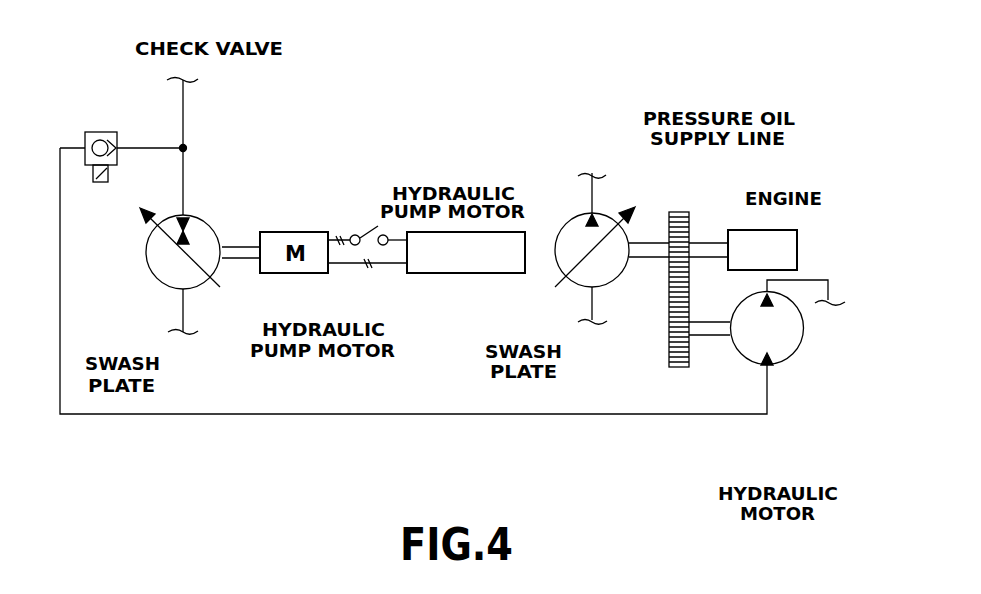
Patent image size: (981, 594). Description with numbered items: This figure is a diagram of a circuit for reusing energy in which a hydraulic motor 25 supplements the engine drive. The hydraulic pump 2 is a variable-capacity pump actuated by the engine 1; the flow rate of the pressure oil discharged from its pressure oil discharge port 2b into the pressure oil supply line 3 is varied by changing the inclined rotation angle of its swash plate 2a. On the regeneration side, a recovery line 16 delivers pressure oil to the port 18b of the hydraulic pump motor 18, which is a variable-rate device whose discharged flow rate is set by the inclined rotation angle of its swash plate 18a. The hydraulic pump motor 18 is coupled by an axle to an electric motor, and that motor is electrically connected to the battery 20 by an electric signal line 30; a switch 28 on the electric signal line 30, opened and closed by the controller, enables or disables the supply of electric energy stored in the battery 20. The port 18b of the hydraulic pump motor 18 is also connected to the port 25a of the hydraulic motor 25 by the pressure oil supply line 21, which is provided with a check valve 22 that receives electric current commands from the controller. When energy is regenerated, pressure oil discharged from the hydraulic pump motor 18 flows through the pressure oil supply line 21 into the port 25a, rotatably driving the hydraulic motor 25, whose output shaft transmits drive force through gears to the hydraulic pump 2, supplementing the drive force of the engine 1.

The engine 1 is at (740, 230).
The hydraulic pump 2 is at (567, 222).
The swash plate 2a is at (575, 258).
The pressure oil discharge port 2b is at (600, 212).
The pressure oil supply line 3 is at (597, 190).
The recovery line 16 is at (183, 165).
The hydraulic pump motor 18 is at (197, 287).
The swash plate 18a is at (168, 235).
The port 18b is at (187, 205).
The battery 20 is at (453, 273).
The pressure oil supply line 21 is at (60, 285).
The check valve 22 is at (108, 132).
The hydraulic motor 25 is at (792, 362).
The port 25a is at (765, 370).
The switch 28 is at (370, 228).
The electric signal line 30 is at (330, 237).